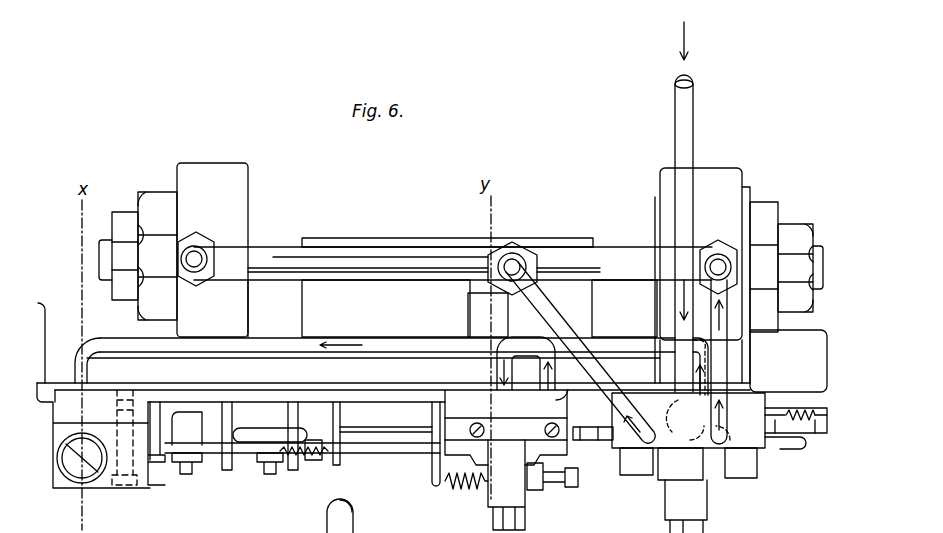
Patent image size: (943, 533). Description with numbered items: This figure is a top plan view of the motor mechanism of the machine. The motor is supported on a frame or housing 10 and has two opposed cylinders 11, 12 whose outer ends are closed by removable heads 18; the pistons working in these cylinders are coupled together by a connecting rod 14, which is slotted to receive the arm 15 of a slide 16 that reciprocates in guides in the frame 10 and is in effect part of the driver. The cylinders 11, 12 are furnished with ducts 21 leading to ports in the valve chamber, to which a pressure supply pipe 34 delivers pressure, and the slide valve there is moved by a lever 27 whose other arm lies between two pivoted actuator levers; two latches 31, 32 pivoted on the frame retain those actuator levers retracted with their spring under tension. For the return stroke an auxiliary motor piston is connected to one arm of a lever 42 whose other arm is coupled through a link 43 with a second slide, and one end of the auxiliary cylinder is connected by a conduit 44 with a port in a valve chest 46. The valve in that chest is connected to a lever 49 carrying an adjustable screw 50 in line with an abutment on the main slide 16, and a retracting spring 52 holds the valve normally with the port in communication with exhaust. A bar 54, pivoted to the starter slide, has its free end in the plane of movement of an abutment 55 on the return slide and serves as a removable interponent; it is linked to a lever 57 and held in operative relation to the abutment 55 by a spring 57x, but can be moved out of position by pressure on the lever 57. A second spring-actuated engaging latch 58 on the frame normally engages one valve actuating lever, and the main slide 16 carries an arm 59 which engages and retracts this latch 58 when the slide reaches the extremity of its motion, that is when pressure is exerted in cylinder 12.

The frame or housing 10 is at (432, 395).
The cylinder 11 is at (212, 163).
The cylinder 12 is at (722, 172).
The connecting rod 14 is at (453, 292).
The arm 15 is at (565, 240).
The slide 16 is at (382, 427).
The removable heads 18 is at (150, 192).
The ducts 21 is at (556, 318).
The lever 27 is at (662, 476).
The latch 31 is at (605, 442).
The latch 32 is at (785, 443).
The pressure supply pipe 34 is at (688, 108).
The lever 42 is at (182, 462).
The link 43 is at (225, 462).
The conduit 44 is at (58, 487).
The valve chest 46 is at (633, 330).
The lever 49 is at (515, 480).
The adjustable screw 50 is at (572, 487).
The retracting spring 52 is at (462, 492).
The bar 54 is at (412, 432).
The abutment 55 is at (298, 430).
The lever 57 is at (262, 430).
The spring 57x is at (318, 462).
The spring-actuated engaging latch 58 is at (776, 407).
The arm 59 is at (800, 407).